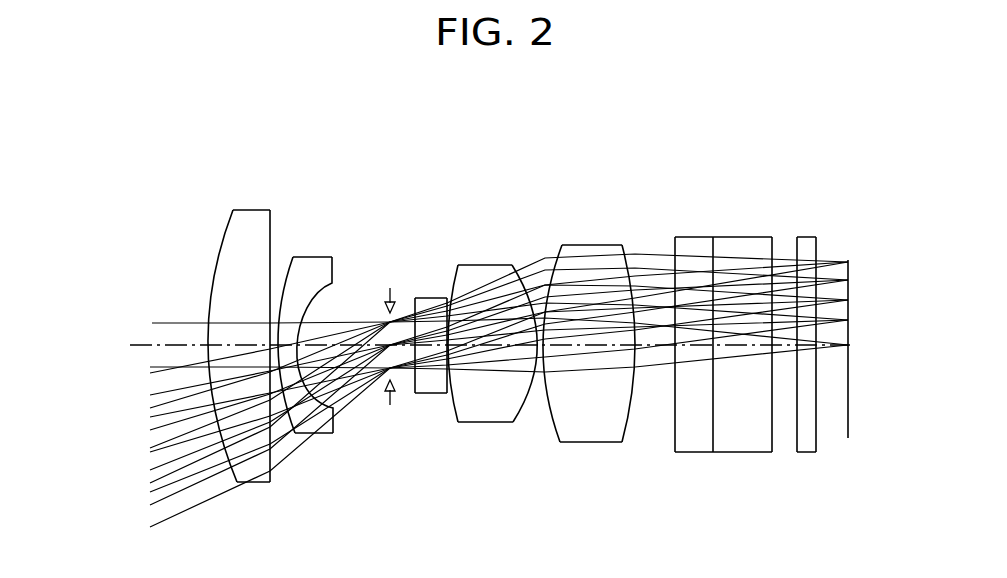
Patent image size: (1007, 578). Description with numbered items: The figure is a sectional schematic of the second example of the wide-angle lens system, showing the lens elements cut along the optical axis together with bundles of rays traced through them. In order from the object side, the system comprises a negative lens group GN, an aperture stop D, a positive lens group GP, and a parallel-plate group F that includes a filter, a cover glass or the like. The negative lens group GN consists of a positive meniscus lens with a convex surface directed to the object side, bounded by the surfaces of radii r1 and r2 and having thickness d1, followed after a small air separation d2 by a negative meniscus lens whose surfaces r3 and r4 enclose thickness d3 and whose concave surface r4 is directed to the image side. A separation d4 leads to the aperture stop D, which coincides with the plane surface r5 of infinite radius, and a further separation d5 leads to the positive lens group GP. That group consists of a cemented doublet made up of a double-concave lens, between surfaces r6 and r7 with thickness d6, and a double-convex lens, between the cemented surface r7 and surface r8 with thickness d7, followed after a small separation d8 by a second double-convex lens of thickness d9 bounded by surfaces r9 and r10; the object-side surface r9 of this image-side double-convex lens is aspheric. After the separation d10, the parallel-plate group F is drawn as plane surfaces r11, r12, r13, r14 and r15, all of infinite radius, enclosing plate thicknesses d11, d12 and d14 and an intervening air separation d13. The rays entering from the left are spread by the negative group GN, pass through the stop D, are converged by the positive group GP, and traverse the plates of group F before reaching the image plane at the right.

The negative lens group GN is at (340, 150).
The aperture stop D is at (408, 150).
The positive lens group GP is at (632, 148).
The parallel-plate group F is at (820, 148).
The radius of curvature of the first lens surface r1 is at (226, 232).
The radius of curvature of the second lens surface r2 is at (272, 250).
The radius of curvature of the third lens surface r3 is at (282, 275).
The radius of curvature of the fourth lens surface r4 is at (320, 295).
The radius of curvature of the fifth surface (stop) r5 is at (393, 322).
The radius of curvature of the sixth lens surface r6 is at (410, 320).
The radius of curvature of the seventh lens surface r7 is at (437, 295).
The radius of curvature of the eighth lens surface r8 is at (540, 280).
The radius of curvature of the ninth lens surface r9 is at (548, 262).
The radius of curvature of the tenth lens surface r10 is at (640, 262).
The radius of curvature of the eleventh surface r11 is at (673, 268).
The radius of curvature of the twelfth surface r12 is at (712, 258).
The radius of curvature of the thirteenth surface r13 is at (773, 258).
The radius of curvature of the fourteenth surface r14 is at (797, 262).
The radius of curvature of the fifteenth surface r15 is at (818, 262).
The separation between the first and second lens surfaces d1 is at (237, 350).
The separation between the second and third lens surfaces d2 is at (275, 380).
The separation between the third and fourth lens surfaces d3 is at (303, 405).
The separation between the fourth lens surface and the stop d4 is at (350, 348).
The separation between the stop and the sixth lens surface d5 is at (430, 352).
The separation between the sixth and seventh lens surfaces d6 is at (447, 385).
The separation between the seventh and eighth lens surfaces d7 is at (493, 350).
The separation between the eighth and ninth lens surfaces d8 is at (540, 350).
The separation between the ninth and tenth lens surfaces d9 is at (588, 350).
The separation between the tenth and eleventh surfaces d10 is at (657, 350).
The separation between the eleventh and twelfth surfaces d11 is at (695, 347).
The separation between the twelfth and thirteenth surfaces d12 is at (740, 347).
The separation between the thirteenth and fourteenth surfaces d13 is at (785, 348).
The separation between the fourteenth and fifteenth surfaces d14 is at (807, 348).